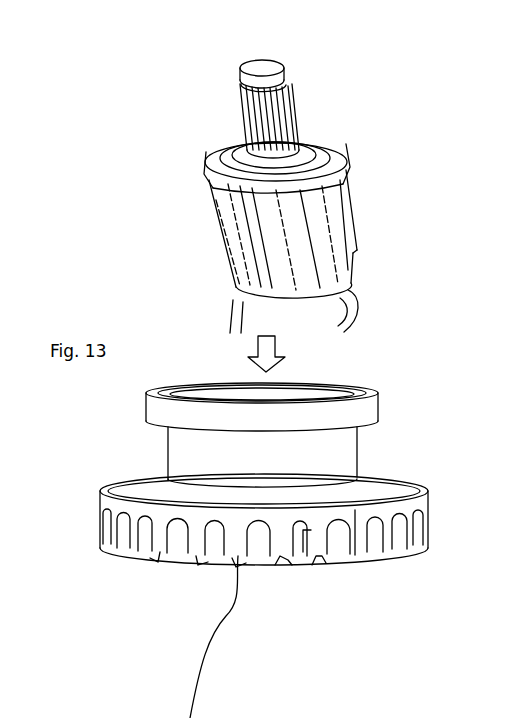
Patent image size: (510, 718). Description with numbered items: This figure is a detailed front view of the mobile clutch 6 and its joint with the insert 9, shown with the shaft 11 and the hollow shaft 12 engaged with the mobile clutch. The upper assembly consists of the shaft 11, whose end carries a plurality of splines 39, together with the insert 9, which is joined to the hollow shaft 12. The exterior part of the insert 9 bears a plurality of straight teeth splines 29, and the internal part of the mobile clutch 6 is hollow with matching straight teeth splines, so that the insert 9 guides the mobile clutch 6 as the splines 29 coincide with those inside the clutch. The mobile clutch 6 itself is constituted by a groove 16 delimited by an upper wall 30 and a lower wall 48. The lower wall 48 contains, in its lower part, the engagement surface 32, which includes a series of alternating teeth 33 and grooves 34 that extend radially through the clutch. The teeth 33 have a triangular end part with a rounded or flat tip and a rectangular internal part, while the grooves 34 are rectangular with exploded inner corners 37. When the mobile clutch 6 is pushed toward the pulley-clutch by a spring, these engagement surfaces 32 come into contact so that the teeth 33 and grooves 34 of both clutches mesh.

The hollow shaft 12 is at (332, 53).
The insert 9 is at (365, 175).
The straight teeth splines 29 is at (275, 138).
The shaft 11 is at (321, 278).
The splines 39 is at (236, 274).
The mobile clutch 6 is at (368, 603).
The upper wall 30 is at (376, 406).
The groove 16 is at (179, 466).
The engagement surface 32 is at (100, 564).
The teeth 33 is at (231, 574).
The grooves 34 is at (331, 545).
The exploded inner corners 37 is at (321, 522).
The lower wall 48 is at (371, 519).